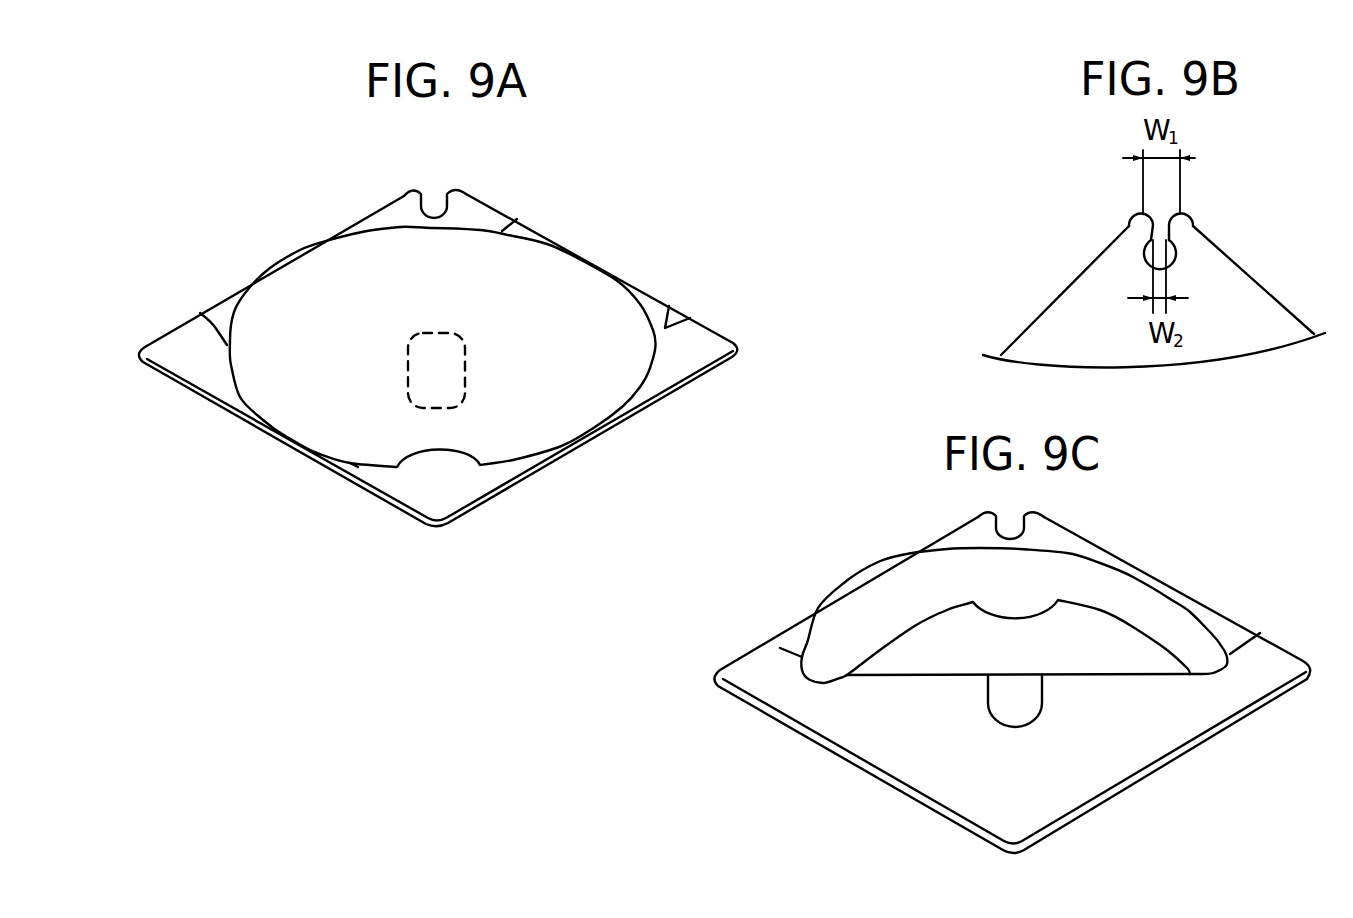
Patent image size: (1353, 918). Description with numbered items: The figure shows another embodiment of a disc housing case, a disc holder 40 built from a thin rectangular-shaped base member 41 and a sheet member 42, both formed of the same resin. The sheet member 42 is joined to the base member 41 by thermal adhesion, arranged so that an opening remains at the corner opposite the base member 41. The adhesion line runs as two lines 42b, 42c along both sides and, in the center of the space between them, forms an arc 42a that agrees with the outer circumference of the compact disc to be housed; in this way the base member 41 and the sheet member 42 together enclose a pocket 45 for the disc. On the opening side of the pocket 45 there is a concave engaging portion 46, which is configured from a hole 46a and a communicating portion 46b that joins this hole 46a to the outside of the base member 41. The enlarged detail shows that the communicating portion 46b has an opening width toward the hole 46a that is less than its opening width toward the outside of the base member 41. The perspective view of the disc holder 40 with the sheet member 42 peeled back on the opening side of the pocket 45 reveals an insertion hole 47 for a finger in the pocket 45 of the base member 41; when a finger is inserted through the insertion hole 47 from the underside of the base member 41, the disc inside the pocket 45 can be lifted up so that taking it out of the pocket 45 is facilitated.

In FIG. 9A, the disc holder 40 is at (610, 194).
In FIG. 9A, the base member 41 is at (423, 493).
In FIG. 9C, the base member 41 is at (917, 768).
In FIG. 9A, the sheet member 42 is at (235, 307).
In FIG. 9C, the sheet member 42 is at (1157, 598).
In FIG. 9A, the arc 42a is at (517, 220).
In FIG. 9A, the line 42b is at (669, 307).
In FIG. 9A, the line 42c is at (200, 313).
In FIG. 9A, the pocket 45 is at (352, 465).
In FIG. 9C, the pocket 45 is at (897, 688).
In FIG. 9A, the concave engaging portion 46 is at (438, 205).
In FIG. 9C, the concave engaging portion 46 is at (1005, 525).
In FIG. 9B, the hole 46a is at (1193, 231).
In FIG. 9B, the communicating portion 46b is at (1130, 227).
In FIG. 9C, the insertion hole 47 is at (1020, 702).